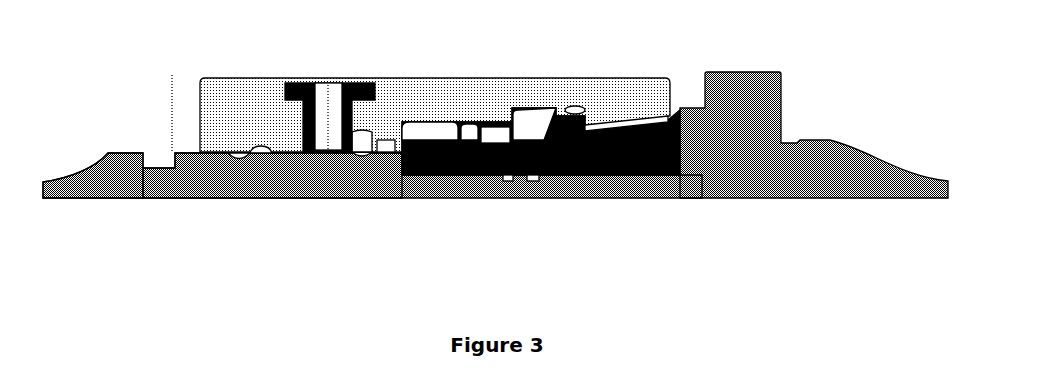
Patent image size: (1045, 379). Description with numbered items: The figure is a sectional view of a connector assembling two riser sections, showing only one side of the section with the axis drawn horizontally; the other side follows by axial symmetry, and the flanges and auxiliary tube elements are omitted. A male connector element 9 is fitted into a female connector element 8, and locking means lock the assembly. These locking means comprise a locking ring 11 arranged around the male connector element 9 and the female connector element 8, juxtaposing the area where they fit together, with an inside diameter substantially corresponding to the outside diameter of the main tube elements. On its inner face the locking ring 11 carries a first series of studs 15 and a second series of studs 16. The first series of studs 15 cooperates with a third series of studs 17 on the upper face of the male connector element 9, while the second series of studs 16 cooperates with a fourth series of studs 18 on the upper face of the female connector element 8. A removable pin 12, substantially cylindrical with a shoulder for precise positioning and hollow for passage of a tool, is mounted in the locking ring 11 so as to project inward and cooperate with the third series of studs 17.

The female connector element 8 is at (790, 175).
The male connector element 9 is at (140, 195).
The locking ring 11 is at (497, 90).
The removable pin 12 is at (328, 82).
The first series of studs 15 is at (245, 142).
The second series of studs 16 is at (615, 110).
The third series of studs 17 is at (265, 150).
The fourth series of studs 18 is at (567, 108).